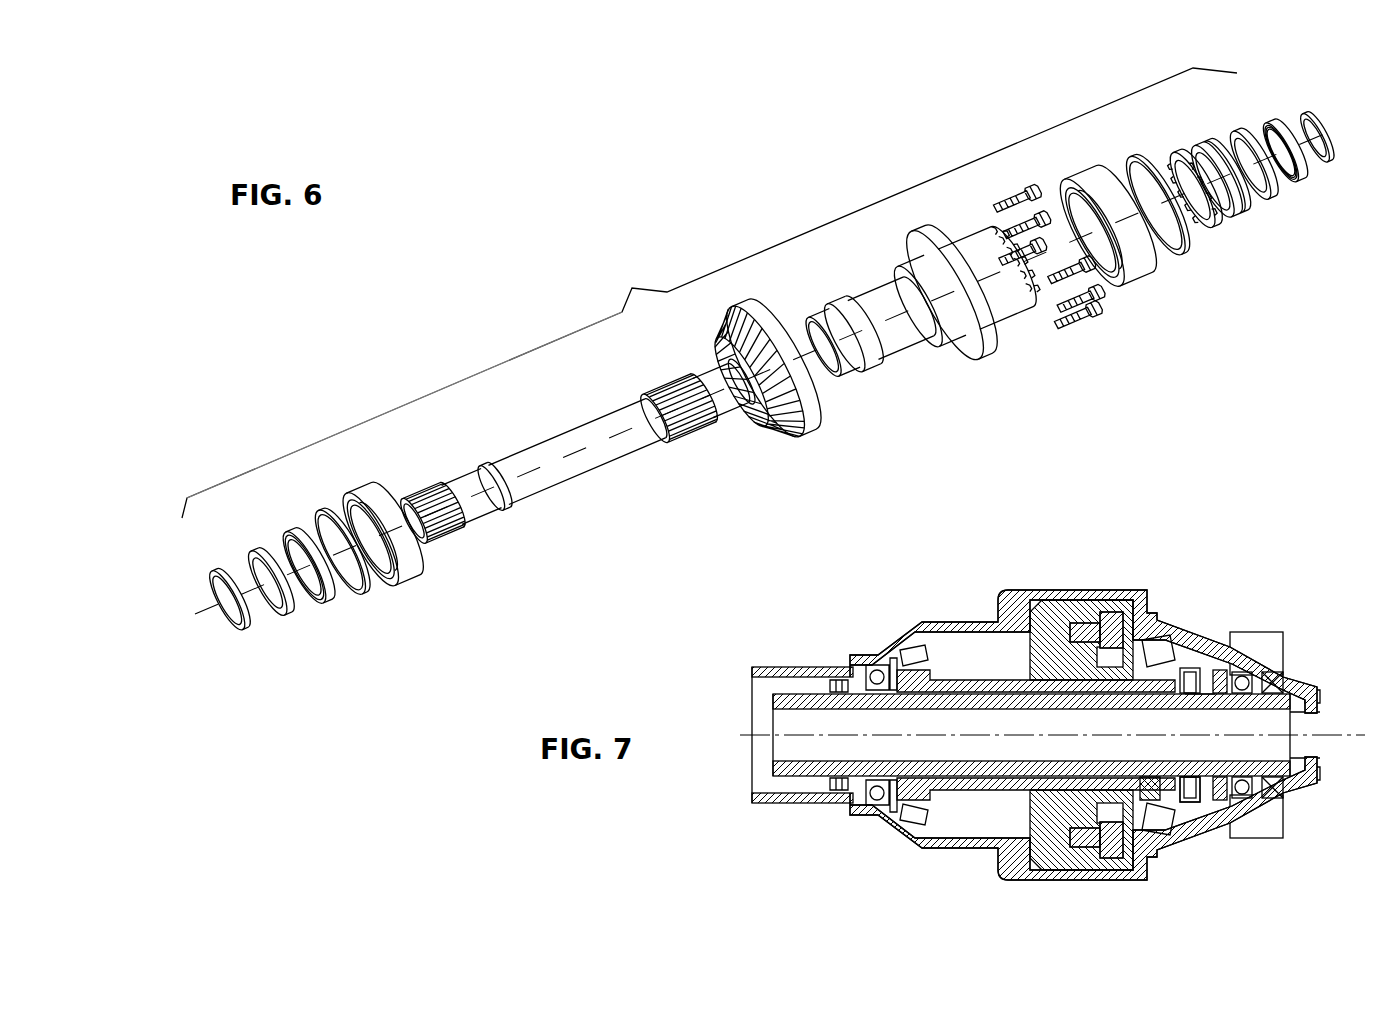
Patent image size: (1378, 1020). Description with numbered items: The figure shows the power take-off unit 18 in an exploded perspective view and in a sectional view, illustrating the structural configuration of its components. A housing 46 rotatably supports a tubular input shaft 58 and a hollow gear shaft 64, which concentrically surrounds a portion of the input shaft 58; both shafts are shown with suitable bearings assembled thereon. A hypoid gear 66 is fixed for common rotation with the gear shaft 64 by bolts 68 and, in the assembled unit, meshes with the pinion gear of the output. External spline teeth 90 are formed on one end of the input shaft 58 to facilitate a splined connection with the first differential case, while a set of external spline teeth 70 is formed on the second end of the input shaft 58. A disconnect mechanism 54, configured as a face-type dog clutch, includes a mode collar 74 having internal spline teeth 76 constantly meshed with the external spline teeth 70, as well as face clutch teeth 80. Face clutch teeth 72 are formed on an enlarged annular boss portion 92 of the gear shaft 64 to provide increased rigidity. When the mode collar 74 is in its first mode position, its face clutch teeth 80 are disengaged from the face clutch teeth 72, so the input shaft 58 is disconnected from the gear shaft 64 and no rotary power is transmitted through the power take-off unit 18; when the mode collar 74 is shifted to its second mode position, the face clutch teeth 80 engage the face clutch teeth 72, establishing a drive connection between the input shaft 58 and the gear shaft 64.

In FIG. 6, the power take-off unit 18 is at (745, 175).
In FIG. 7, the housing 46 is at (947, 625).
In FIG. 7, the disconnect mechanism 54 is at (1240, 648).
In FIG. 6, the input shaft 58 is at (594, 425).
In FIG. 7, the input shaft 58 is at (827, 768).
In FIG. 6, the gear shaft 64 is at (918, 355).
In FIG. 7, the gear shaft 64 is at (977, 685).
In FIG. 6, the hypoid gear 66 is at (768, 453).
In FIG. 7, the hypoid gear 66 is at (1050, 618).
In FIG. 6, the bolts 68 is at (1027, 187).
In FIG. 7, the bolts 68 is at (1118, 628).
In FIG. 6, the external spline teeth 70 is at (676, 425).
In FIG. 7, the external spline teeth 70 is at (1192, 690).
In FIG. 6, the face clutch teeth 72 is at (987, 243).
In FIG. 7, the face clutch teeth 72 is at (1183, 790).
In FIG. 6, the mode collar 74 is at (1217, 157).
In FIG. 7, the mode collar 74 is at (1218, 672).
In FIG. 7, the internal spline teeth 76 is at (1213, 692).
In FIG. 6, the face clutch teeth 80 is at (1177, 153).
In FIG. 7, the face clutch teeth 80 is at (1190, 670).
In FIG. 6, the external spline teeth 90 is at (423, 497).
In FIG. 7, the external spline teeth 90 is at (790, 693).
In FIG. 6, the annular boss portion 92 is at (1000, 310).
In FIG. 7, the annular boss portion 92 is at (1150, 789).